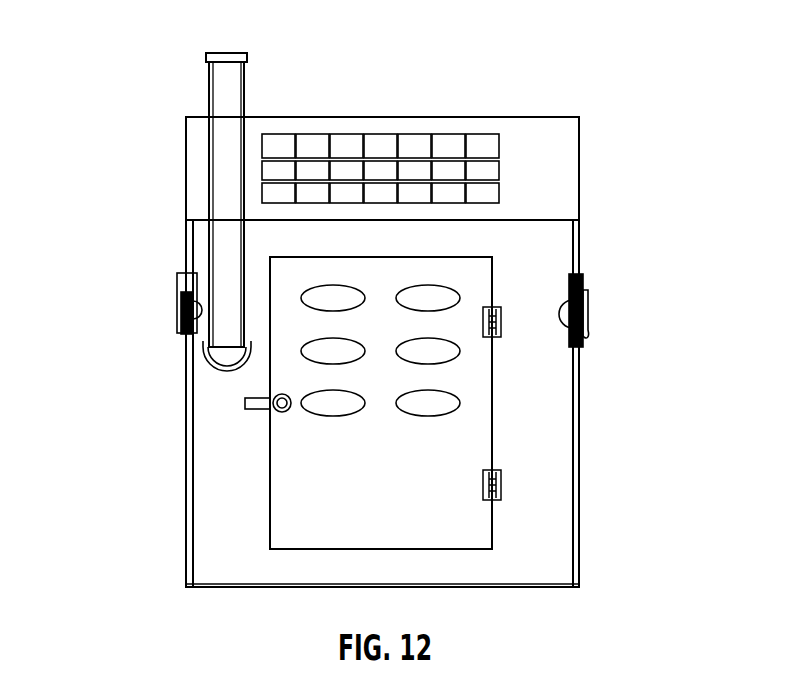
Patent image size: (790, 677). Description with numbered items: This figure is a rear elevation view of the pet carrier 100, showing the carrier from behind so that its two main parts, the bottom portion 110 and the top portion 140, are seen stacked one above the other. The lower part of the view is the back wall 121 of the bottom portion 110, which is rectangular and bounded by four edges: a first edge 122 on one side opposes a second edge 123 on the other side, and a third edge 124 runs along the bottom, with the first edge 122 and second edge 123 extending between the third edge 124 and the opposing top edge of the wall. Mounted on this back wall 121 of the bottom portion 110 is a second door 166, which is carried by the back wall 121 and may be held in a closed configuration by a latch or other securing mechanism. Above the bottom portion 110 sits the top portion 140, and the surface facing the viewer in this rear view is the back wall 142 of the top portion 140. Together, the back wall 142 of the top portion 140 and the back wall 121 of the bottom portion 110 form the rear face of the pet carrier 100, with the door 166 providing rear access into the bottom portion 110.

The pet carrier 100 is at (148, 75).
The bottom portion 110 is at (135, 490).
The back wall 121 is at (608, 483).
The first edge 122 is at (580, 553).
The second edge 123 is at (186, 412).
The third edge 124 is at (267, 587).
The top portion 140 is at (287, 97).
The back wall 142 is at (586, 167).
The second door 166 is at (258, 300).